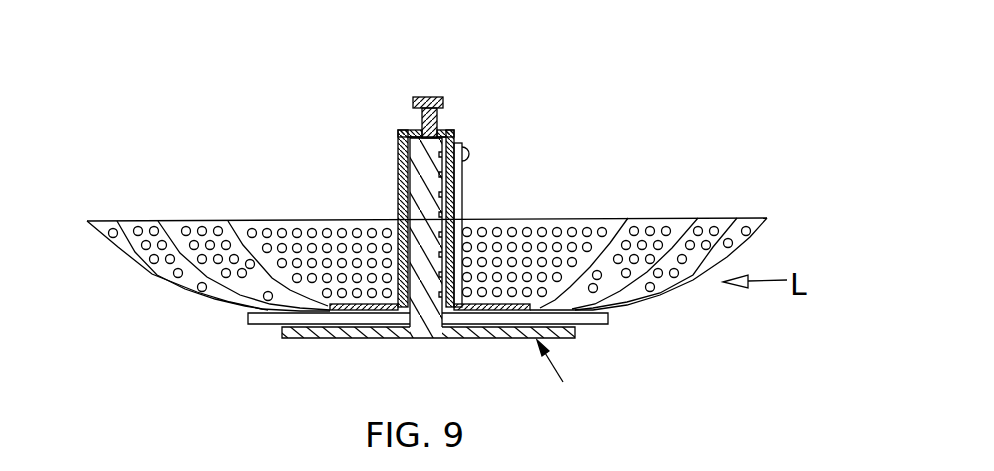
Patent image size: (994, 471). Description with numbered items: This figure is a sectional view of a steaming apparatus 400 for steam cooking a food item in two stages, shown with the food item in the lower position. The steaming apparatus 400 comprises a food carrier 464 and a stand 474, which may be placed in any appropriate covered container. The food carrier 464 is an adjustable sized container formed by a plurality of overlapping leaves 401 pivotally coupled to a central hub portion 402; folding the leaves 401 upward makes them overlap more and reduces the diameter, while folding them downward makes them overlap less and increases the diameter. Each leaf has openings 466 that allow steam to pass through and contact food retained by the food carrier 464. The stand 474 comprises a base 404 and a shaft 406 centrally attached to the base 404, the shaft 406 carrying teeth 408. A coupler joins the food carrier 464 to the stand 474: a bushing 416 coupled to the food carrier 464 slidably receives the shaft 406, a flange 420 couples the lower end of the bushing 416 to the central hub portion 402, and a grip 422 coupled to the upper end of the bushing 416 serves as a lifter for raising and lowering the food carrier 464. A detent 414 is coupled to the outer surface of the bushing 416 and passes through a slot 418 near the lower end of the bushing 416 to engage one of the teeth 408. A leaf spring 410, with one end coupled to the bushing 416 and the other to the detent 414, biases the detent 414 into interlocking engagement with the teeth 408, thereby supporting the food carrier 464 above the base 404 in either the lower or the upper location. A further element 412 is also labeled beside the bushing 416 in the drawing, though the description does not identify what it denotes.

The steaming apparatus 400 is at (236, 180).
The overlapping leaves 401 is at (158, 270).
The central hub portion 402 is at (268, 316).
The base 404 is at (323, 338).
The shaft 406 is at (418, 178).
The teeth 408 is at (412, 216).
The leaf spring 410 is at (467, 189).
The locating pin 412 is at (471, 151).
The detent 414 is at (458, 278).
The bushing 416 is at (400, 143).
The slot 418 is at (463, 282).
The flange 420 is at (377, 310).
The grip 422 is at (432, 98).
The food carrier 464 is at (660, 217).
The openings 466 is at (564, 232).
The stand 474 is at (562, 377).